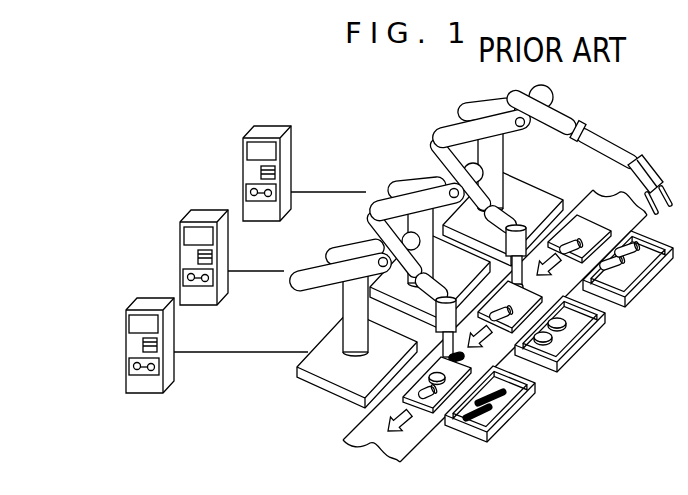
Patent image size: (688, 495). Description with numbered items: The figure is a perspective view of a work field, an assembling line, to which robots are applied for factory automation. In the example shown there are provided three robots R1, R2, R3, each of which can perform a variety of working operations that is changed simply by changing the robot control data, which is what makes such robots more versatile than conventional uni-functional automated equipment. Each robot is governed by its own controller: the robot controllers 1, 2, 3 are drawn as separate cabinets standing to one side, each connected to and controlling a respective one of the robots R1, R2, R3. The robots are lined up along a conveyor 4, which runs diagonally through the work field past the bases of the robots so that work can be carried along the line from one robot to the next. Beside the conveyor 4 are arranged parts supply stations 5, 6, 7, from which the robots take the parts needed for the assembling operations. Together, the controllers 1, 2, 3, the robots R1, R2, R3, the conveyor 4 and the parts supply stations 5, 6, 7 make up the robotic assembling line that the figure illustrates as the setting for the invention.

The robot controller 1 is at (134, 301).
The robot controller 2 is at (183, 216).
The robot controller 3 is at (249, 136).
The robot R1 is at (312, 268).
The robot R2 is at (380, 208).
The robot R3 is at (436, 129).
The conveyor 4 is at (413, 437).
The parts supply station 5 is at (512, 413).
The parts supply station 6 is at (582, 340).
The parts supply station 7 is at (643, 265).